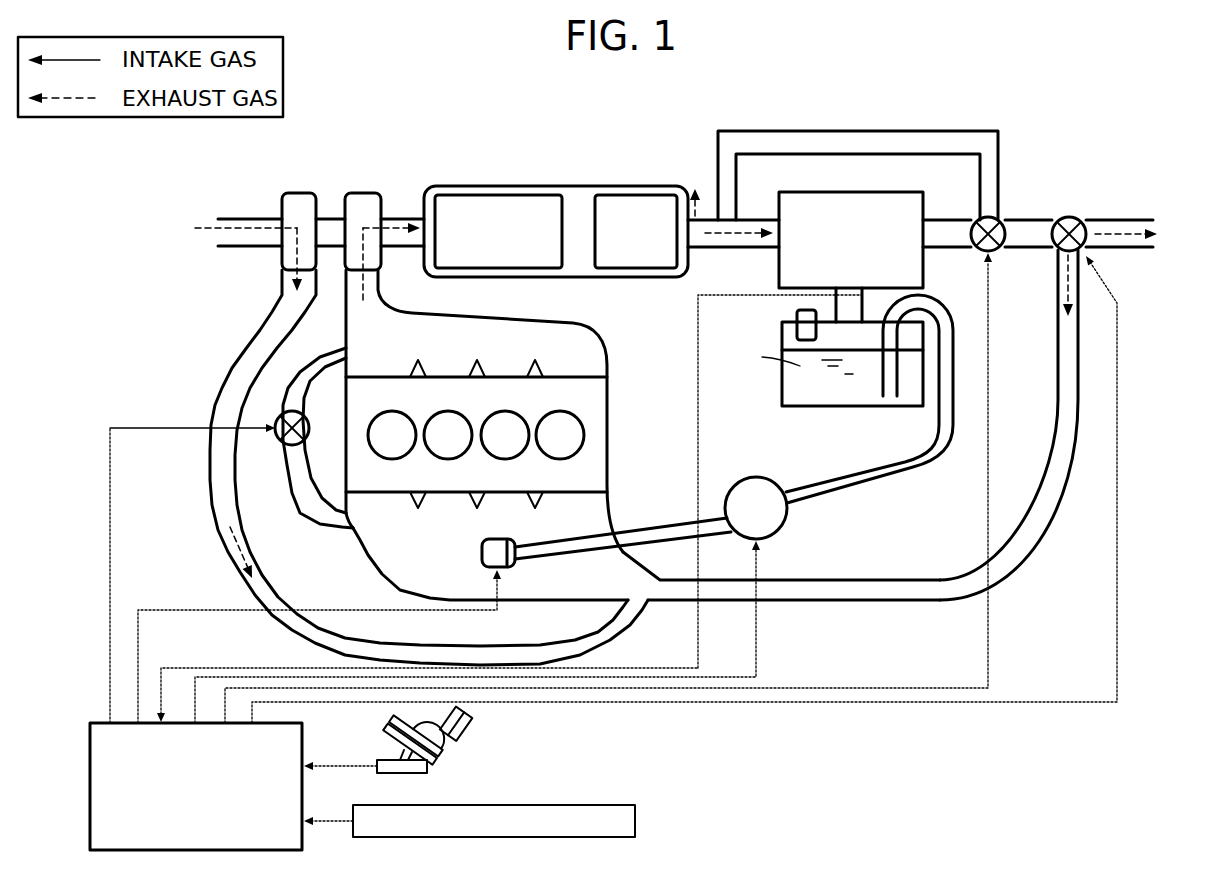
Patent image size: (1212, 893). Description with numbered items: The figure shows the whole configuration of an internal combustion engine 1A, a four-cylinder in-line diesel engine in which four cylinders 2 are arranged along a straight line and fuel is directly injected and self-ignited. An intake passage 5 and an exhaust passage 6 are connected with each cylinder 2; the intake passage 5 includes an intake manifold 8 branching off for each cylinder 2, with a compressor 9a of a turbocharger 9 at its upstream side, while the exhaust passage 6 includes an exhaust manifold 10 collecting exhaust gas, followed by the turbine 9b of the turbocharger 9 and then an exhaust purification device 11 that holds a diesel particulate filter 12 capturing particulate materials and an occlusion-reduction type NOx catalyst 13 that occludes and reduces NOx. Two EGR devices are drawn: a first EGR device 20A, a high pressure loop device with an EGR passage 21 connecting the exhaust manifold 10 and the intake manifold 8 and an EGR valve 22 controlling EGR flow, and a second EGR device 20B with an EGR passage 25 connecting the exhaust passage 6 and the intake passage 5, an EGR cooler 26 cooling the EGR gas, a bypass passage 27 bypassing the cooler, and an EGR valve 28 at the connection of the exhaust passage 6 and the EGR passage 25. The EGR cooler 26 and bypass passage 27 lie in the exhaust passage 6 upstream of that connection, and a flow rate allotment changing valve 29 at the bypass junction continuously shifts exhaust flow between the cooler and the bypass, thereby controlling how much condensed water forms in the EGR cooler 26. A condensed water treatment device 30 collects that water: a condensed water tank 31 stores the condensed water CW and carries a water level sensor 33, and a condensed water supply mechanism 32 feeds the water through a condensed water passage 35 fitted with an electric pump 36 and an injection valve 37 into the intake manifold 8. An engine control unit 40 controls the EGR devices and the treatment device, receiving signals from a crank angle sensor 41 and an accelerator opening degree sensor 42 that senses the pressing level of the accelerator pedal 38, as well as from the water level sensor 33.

The internal combustion engine 1A is at (477, 108).
The cylinder 2 is at (434, 447).
The intake passage 5 is at (210, 396).
The exhaust passage 6 is at (405, 212).
The intake manifold 8 is at (360, 541).
The turbocharger 9 is at (275, 143).
The compressor 9a is at (292, 200).
The turbine 9b is at (360, 200).
The exhaust manifold 10 is at (592, 330).
The exhaust purification device 11 is at (558, 176).
The diesel particulate filter 12 is at (495, 203).
The occlusion-reduction type NOx catalyst 13 is at (630, 202).
The first EGR device 20A is at (278, 372).
The second EGR device 20B is at (1040, 162).
The EGR passage 21 is at (296, 507).
The EGR valve 22 is at (288, 443).
The EGR passage 25 is at (1027, 567).
The EGR cooler 26 is at (800, 200).
The bypass passage 27 is at (850, 131).
The EGR valve 28 is at (1069, 217).
The flow rate allotment changing valve 29 is at (977, 220).
The condensed water treatment device 30 is at (757, 419).
The condensed water tank 31 is at (783, 381).
The condensed water supply mechanism 32 is at (905, 480).
The water level sensor 33 is at (797, 325).
The condensed water passage 35 is at (677, 528).
The electric pump 36 is at (766, 490).
The injection valve 37 is at (512, 572).
The accelerator pedal 38 is at (387, 720).
The engine control unit 40 is at (93, 723).
The crank angle sensor 41 is at (637, 819).
The accelerator opening degree sensor 42 is at (430, 768).